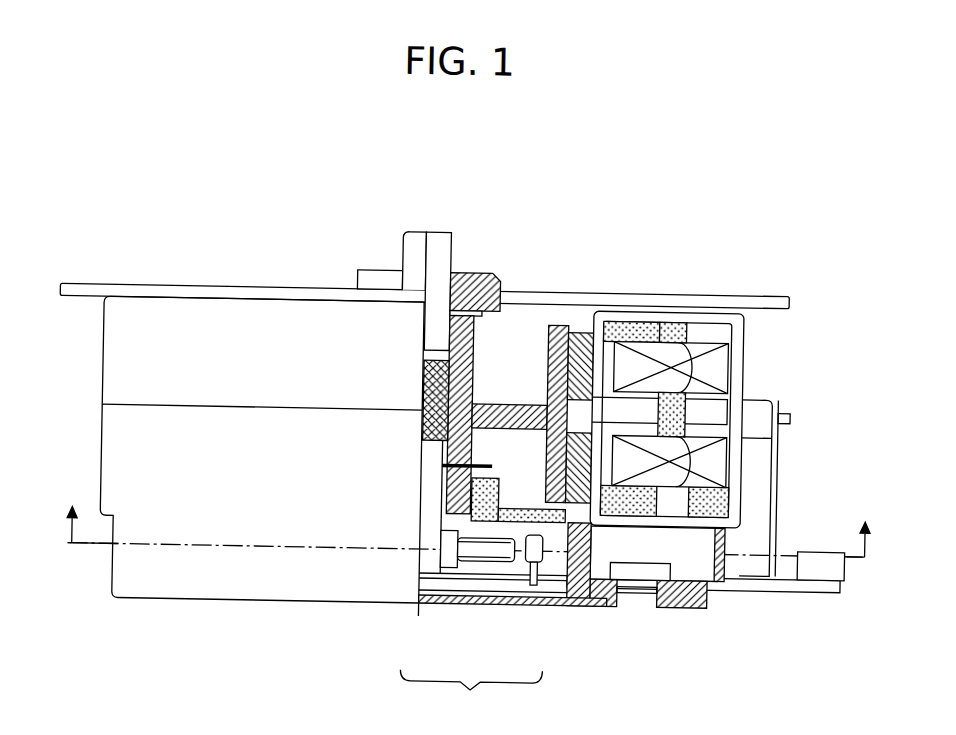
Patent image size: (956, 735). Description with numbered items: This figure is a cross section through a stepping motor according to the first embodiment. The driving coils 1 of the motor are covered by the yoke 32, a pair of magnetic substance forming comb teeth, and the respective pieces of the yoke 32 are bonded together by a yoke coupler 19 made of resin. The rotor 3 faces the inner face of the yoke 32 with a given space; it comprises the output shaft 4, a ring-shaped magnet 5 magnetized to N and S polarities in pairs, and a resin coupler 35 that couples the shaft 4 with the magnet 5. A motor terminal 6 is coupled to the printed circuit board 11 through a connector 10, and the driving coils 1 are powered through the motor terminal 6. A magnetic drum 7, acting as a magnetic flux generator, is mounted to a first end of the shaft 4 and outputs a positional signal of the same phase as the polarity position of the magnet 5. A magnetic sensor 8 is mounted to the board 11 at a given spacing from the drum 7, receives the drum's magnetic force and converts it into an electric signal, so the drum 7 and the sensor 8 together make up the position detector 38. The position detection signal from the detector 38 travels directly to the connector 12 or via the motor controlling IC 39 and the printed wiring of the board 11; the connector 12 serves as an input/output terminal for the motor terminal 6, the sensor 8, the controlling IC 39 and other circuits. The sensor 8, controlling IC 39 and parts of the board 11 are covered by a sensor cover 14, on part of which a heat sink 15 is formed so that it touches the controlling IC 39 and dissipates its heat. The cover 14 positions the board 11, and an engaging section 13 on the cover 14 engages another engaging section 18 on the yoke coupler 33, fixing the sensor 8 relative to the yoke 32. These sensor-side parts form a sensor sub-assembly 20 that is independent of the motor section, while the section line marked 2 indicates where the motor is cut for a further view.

The driving coils 1 is at (666, 365).
The section line 2 is at (466, 536).
The rotor 3 is at (474, 371).
The output shaft 4 is at (432, 253).
The ring-shaped magnet 5 is at (579, 327).
The motor terminal 6 is at (790, 410).
The magnetic drum 7 is at (493, 576).
The magnetic sensor 8 is at (536, 595).
The connector 10 is at (779, 503).
The printed circuit board 11 is at (836, 584).
The connector 12 is at (816, 566).
The engaging section 13 is at (583, 600).
The sensor cover 14 is at (556, 601).
The heat sink 15 is at (646, 593).
The engaging section 18 is at (429, 362).
The yoke coupler 19 is at (701, 465).
The sensor sub-assembly 20 is at (250, 585).
The yoke 32 is at (708, 495).
The yoke coupler 33 is at (446, 466).
The coupler 35 is at (508, 396).
The position detector 38 is at (470, 699).
The motor controlling IC 39 is at (693, 602).